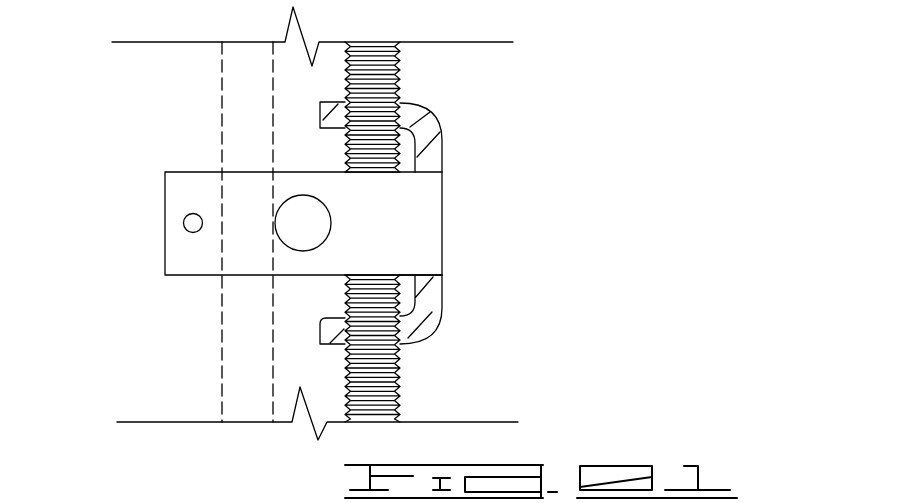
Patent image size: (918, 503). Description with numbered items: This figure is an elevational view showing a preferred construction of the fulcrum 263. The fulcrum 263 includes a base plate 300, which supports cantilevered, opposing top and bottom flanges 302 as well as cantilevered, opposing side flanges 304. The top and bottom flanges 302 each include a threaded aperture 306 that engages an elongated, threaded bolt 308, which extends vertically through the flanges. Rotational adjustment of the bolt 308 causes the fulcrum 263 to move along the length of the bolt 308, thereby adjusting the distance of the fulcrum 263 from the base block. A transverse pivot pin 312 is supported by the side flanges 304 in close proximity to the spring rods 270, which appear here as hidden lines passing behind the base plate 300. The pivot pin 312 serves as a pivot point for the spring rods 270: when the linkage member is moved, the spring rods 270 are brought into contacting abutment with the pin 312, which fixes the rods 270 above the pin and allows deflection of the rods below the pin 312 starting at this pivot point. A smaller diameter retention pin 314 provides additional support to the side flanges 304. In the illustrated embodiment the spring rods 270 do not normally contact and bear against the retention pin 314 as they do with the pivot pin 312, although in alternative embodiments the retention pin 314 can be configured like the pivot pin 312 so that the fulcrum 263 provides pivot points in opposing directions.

The fulcrum 263 is at (94, 210).
The spring rods 270 is at (218, 106).
The base plate 300 is at (443, 224).
The top and bottom flanges 302 is at (437, 118).
The side flanges 304 is at (407, 255).
The threaded aperture 306 is at (400, 108).
The threaded bolt 308 is at (420, 73).
The pivot pin 312 is at (323, 222).
The retention pin 314 is at (190, 222).